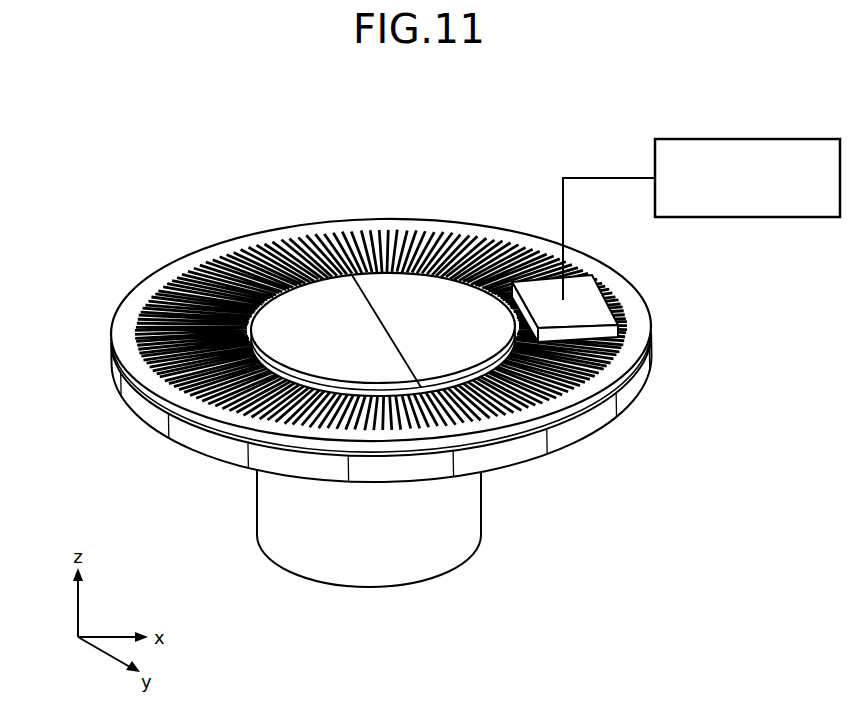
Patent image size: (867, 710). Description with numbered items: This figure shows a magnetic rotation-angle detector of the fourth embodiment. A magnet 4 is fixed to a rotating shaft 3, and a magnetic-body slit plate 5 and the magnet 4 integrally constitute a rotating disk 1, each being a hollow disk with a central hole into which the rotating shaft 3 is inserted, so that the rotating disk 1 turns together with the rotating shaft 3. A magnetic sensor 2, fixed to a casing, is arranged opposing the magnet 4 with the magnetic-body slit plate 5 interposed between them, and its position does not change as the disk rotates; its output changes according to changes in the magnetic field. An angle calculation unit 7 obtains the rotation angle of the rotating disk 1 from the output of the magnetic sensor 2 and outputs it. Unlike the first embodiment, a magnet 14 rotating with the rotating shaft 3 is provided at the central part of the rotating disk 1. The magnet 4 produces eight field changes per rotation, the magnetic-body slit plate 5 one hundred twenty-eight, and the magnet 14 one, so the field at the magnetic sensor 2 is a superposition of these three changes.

The rotating disk 1 is at (329, 351).
The magnetic sensor 2 is at (590, 296).
The rotating shaft 3 is at (481, 517).
The magnet 4 is at (135, 412).
The magnetic-body slit plate 5 is at (107, 358).
The angle calculation unit 7 is at (808, 139).
The magnet 14 is at (382, 287).